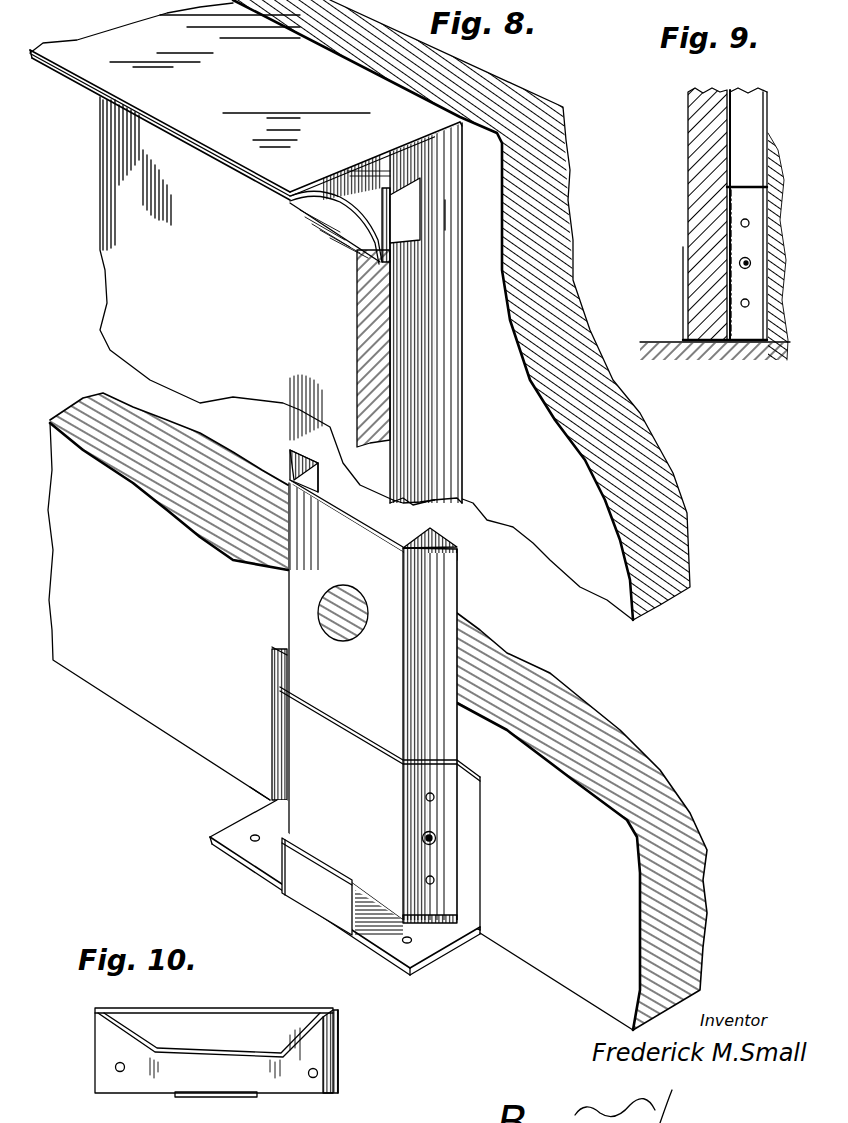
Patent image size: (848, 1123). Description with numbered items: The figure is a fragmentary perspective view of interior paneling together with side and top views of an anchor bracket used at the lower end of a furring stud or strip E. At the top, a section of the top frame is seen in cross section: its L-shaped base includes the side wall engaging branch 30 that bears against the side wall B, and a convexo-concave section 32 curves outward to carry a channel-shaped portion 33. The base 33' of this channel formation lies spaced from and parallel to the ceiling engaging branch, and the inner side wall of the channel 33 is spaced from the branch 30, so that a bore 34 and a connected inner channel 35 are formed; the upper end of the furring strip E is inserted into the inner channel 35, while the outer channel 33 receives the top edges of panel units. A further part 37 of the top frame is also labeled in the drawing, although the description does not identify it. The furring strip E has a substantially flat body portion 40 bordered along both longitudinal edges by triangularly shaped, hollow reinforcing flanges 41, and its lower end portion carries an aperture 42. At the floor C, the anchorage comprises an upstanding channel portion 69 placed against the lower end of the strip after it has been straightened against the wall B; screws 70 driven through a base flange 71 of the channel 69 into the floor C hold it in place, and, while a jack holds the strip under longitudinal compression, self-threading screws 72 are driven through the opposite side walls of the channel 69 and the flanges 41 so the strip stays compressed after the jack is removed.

In FIG. 8, the side wall engaging branch 30 is at (456, 142).
In FIG. 8, the convexo-concave section 32 is at (347, 214).
In FIG. 8, the channel-shaped portion 33 is at (442, 252).
In FIG. 8, the base of channel formation 33' is at (373, 191).
In FIG. 8, the bore 34 is at (468, 134).
In FIG. 8, the inner channel 35 is at (448, 212).
In FIG. 8, the top plate 37 is at (245, 125).
In FIG. 8, the body portion 40 is at (372, 478).
In FIG. 8, the reinforcing flanges 41 is at (290, 458).
In FIG. 8, the aperture 42 is at (345, 641).
In FIG. 8, the upstanding channel portion 69 is at (297, 737).
In FIG. 9, the upstanding channel portion 69 is at (757, 210).
In FIG. 10, the upstanding channel portion 69 is at (227, 1047).
In FIG. 8, the screws 70 is at (253, 840).
In FIG. 8, the base flange 71 is at (387, 943).
In FIG. 9, the base flange 71 is at (713, 344).
In FIG. 10, the base flange 71 is at (327, 1046).
In FIG. 8, the self-threading screws 72 is at (438, 841).
In FIG. 9, the self-threading screws 72 is at (751, 263).
In FIG. 8, the side wall B is at (593, 485).
In FIG. 8, the floor C is at (246, 790).
In FIG. 8, the furring stud or strip E is at (447, 607).